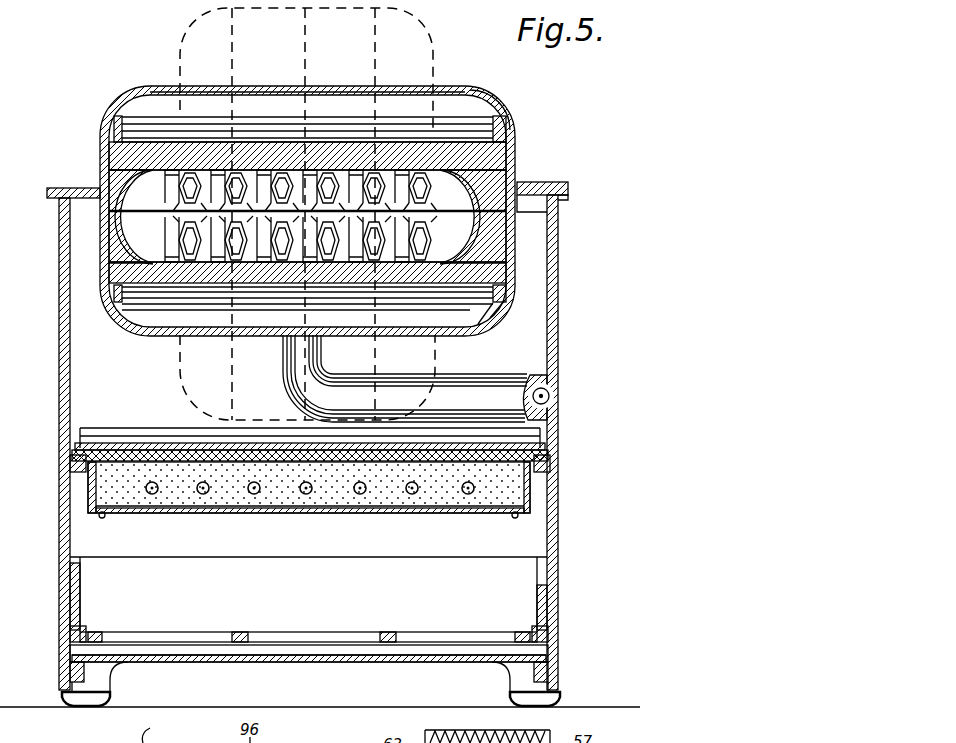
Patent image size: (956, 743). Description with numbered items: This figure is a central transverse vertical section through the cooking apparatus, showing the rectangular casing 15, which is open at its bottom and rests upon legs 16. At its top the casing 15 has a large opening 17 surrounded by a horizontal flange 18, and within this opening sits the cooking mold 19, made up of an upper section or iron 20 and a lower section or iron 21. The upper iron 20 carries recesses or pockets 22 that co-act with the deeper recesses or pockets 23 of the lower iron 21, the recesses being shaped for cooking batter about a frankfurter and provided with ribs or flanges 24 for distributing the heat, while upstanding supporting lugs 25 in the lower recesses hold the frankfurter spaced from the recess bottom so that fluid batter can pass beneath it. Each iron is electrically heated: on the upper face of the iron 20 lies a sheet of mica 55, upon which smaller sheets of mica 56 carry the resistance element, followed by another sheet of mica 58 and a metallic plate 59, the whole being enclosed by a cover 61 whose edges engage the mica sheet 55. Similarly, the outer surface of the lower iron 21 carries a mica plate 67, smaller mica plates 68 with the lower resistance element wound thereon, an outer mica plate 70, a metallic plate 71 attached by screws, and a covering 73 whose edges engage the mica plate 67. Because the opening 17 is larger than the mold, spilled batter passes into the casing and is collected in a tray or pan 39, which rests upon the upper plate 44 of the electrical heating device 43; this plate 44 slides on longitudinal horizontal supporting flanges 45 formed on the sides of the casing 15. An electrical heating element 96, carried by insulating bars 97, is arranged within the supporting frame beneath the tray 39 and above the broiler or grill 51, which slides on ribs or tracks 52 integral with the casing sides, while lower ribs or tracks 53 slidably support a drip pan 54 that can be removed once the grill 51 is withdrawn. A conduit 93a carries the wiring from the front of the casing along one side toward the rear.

The casing 15 is at (559, 507).
The legs 16 is at (110, 694).
The large opening 17 is at (522, 182).
The horizontal flange 18 is at (561, 186).
The cooking mold 19 is at (521, 116).
The upper section or iron 20 is at (100, 152).
The lower section or iron 21 is at (100, 262).
The recesses or pockets 22 is at (458, 167).
The recesses or pockets 23 is at (515, 243).
The ribs or flanges 24 is at (247, 187).
The upstanding supporting lugs 25 is at (515, 262).
The tray or pan 39 is at (152, 430).
The electrical heating device 43 is at (542, 491).
The upper plate 44 is at (548, 450).
The longitudinal horizontal supporting flanges 45 is at (70, 465).
The broiler or grill 51 is at (359, 629).
The ribs or tracks 52 is at (70, 633).
The ribs or tracks 53 is at (75, 667).
The drip pan 54 is at (425, 660).
The sheet of mica 55 is at (508, 130).
The smaller sheets of mica 56 is at (482, 130).
The sheet of mica 58 is at (116, 124).
The metallic plate 59 is at (150, 117).
The cover 61 is at (455, 88).
The mica plate 67 is at (510, 283).
The smaller mica plates 68 is at (505, 297).
The outer mica plate 70 is at (500, 306).
The metallic plate 71 is at (489, 320).
The covering 73 is at (147, 335).
The conduit 93a is at (558, 382).
The electrical heating element 96 is at (204, 497).
The insulating bars 97 is at (241, 500).